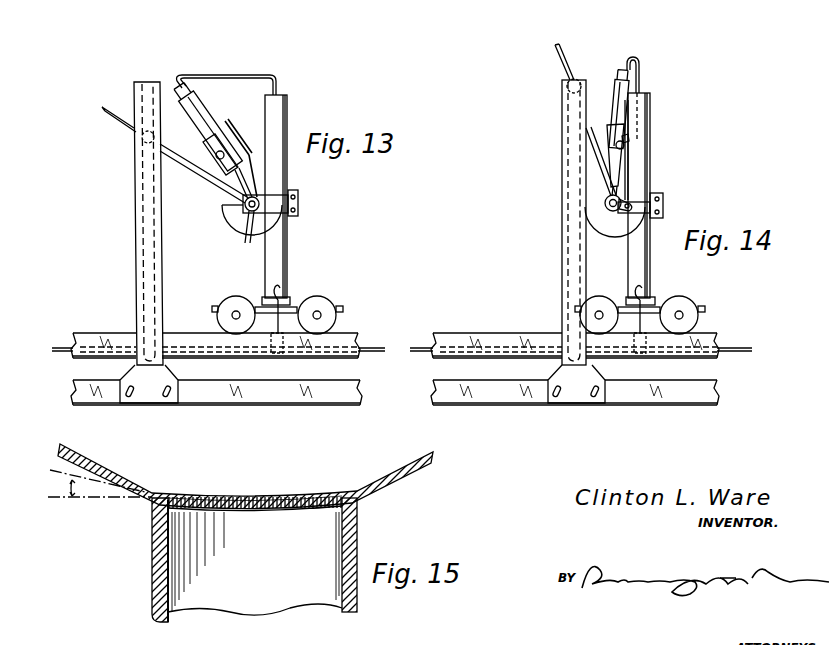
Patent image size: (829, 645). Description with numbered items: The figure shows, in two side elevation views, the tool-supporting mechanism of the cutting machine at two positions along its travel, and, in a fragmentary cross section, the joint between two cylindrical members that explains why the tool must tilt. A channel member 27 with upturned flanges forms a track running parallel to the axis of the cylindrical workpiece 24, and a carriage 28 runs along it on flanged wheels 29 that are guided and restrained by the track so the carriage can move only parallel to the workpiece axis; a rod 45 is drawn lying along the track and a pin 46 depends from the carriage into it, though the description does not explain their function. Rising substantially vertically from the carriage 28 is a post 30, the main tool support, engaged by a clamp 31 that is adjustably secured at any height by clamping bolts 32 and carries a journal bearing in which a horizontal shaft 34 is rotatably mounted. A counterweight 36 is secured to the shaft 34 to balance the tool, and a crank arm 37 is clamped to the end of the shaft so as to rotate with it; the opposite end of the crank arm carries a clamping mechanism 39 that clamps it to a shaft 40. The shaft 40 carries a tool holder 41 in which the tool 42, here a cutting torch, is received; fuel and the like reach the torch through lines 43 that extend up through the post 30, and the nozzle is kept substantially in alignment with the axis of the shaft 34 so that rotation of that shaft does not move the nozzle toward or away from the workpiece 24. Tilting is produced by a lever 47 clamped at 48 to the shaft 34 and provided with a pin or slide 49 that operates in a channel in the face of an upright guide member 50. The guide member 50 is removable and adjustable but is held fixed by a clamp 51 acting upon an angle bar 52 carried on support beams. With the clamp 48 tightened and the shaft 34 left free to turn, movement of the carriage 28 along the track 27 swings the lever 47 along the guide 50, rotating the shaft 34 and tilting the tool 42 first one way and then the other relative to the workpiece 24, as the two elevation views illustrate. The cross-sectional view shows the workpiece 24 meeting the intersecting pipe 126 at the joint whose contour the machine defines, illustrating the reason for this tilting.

In FIG. 15, the workpiece 24 is at (150, 562).
In FIG. 15, the pipe 126 is at (398, 476).
In FIG. 13, the channel member 27 is at (350, 330).
In FIG. 14, the channel member 27 is at (708, 332).
In FIG. 13, the carriage 28 is at (290, 298).
In FIG. 14, the carriage 28 is at (650, 298).
In FIG. 13, the flanged wheels 29 is at (336, 303).
In FIG. 14, the flanged wheels 29 is at (698, 303).
In FIG. 13, the post 30 is at (284, 243).
In FIG. 14, the post 30 is at (648, 238).
In FIG. 13, the clamp 31 is at (286, 188).
In FIG. 14, the clamp 31 is at (645, 194).
In FIG. 13, the clamping bolts 32 is at (299, 209).
In FIG. 14, the clamping bolts 32 is at (664, 206).
In FIG. 13, the shaft 34 is at (251, 240).
In FIG. 14, the shaft 34 is at (606, 202).
In FIG. 13, the counterweight 36 is at (222, 216).
In FIG. 14, the counterweight 36 is at (598, 222).
In FIG. 13, the crank arm 37 is at (230, 182).
In FIG. 14, the crank arm 37 is at (622, 163).
In FIG. 13, the clamping mechanism 39 is at (230, 138).
In FIG. 14, the clamping mechanism 39 is at (630, 134).
In FIG. 13, the shaft 40 is at (216, 155).
In FIG. 14, the shaft 40 is at (624, 144).
In FIG. 13, the tool holder 41 is at (222, 128).
In FIG. 14, the tool holder 41 is at (610, 128).
In FIG. 13, the tool 42 is at (200, 106).
In FIG. 14, the tool 42 is at (640, 86).
In FIG. 13, the lines 43 is at (206, 75).
In FIG. 14, the lines 43 is at (640, 60).
In FIG. 13, the rod 45 is at (368, 353).
In FIG. 14, the rod 45 is at (740, 353).
In FIG. 13, the pin 46 is at (290, 274).
In FIG. 14, the pin 46 is at (650, 274).
In FIG. 13, the lever 47 is at (118, 106).
In FIG. 14, the lever 47 is at (566, 46).
In FIG. 13, the clamp 48 is at (240, 224).
In FIG. 14, the clamp 48 is at (622, 200).
In FIG. 13, the pin or slide 49 is at (143, 134).
In FIG. 14, the pin or slide 49 is at (578, 80).
In FIG. 13, the upright guide member 50 is at (138, 150).
In FIG. 14, the upright guide member 50 is at (565, 207).
In FIG. 13, the clamp 51 is at (150, 396).
In FIG. 14, the clamp 51 is at (578, 396).
In FIG. 13, the angle bar 52 is at (252, 401).
In FIG. 14, the angle bar 52 is at (654, 398).